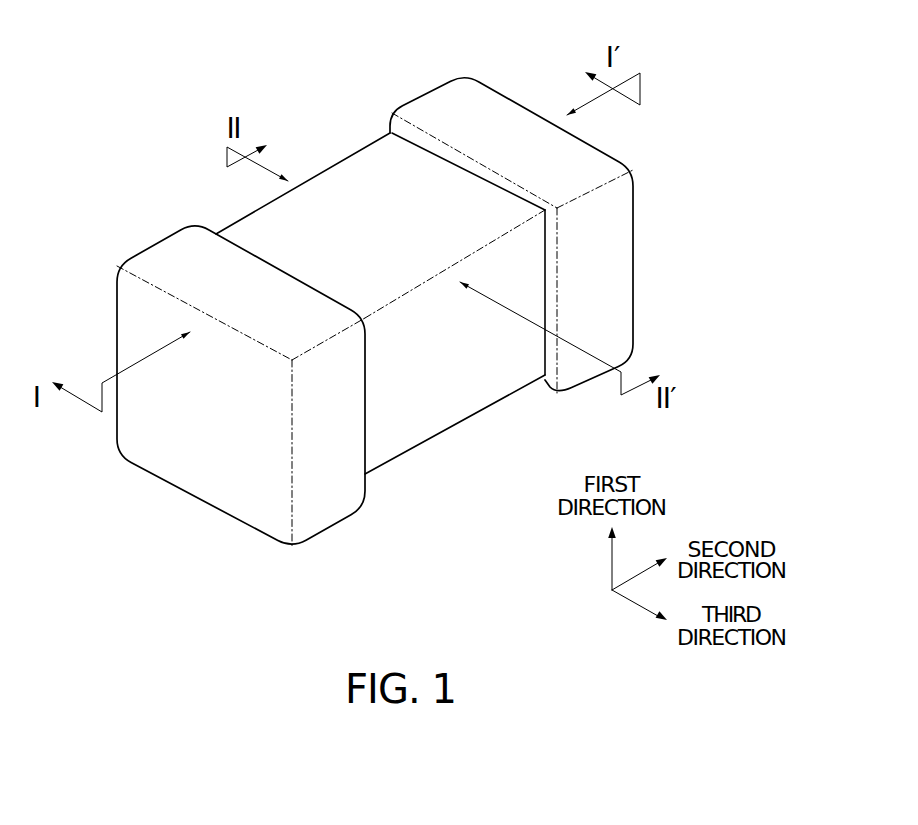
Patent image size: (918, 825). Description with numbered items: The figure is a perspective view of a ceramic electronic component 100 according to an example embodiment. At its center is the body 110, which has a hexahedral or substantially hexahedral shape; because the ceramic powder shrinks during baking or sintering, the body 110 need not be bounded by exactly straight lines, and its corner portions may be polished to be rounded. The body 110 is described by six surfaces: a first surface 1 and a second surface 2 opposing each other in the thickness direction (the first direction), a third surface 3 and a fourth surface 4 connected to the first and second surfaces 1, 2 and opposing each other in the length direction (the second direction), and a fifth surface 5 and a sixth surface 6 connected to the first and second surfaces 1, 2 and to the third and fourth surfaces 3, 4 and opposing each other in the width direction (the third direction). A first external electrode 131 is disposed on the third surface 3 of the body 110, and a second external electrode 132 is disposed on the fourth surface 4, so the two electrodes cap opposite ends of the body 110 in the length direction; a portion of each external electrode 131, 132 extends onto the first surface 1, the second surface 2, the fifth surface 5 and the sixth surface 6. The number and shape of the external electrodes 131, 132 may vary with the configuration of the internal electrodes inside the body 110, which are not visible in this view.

The ceramic electronic component 100 is at (163, 42).
The body 110 is at (253, 240).
The first external electrode 131 is at (178, 258).
The second external electrode 132 is at (433, 110).
The first surface 1 is at (437, 442).
The second surface 2 is at (389, 184).
The third surface 3 is at (208, 447).
The fourth surface 4 is at (584, 246).
The fifth surface 5 is at (332, 209).
The sixth surface 6 is at (477, 367).